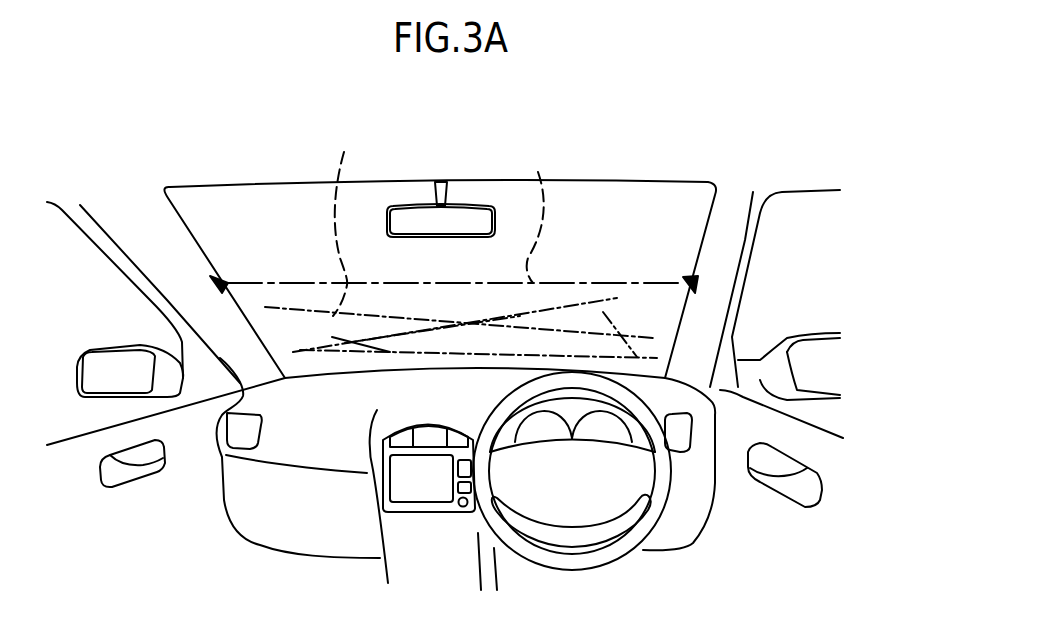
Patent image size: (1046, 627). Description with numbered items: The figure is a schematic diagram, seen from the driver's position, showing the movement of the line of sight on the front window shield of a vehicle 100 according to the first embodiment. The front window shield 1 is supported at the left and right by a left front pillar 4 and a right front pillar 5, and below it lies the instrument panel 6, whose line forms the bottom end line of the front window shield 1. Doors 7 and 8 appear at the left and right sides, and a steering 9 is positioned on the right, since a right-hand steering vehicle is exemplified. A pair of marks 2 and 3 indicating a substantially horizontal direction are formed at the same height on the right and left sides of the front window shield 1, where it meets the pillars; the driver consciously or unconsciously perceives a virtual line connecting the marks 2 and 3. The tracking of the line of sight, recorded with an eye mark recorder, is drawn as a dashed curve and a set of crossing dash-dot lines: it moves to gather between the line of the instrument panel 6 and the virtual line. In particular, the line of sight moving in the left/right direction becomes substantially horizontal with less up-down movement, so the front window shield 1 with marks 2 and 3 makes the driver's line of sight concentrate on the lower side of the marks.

The vehicle 100 is at (654, 108).
The front window shield 1 is at (285, 228).
The mark 2 is at (222, 277).
The mark 3 is at (697, 287).
The left front pillar 4 is at (183, 287).
The right front pillar 5 is at (727, 253).
The instrument panel 6 is at (320, 405).
The door 7 is at (70, 468).
The door 8 is at (818, 461).
The steering 9 is at (653, 517).